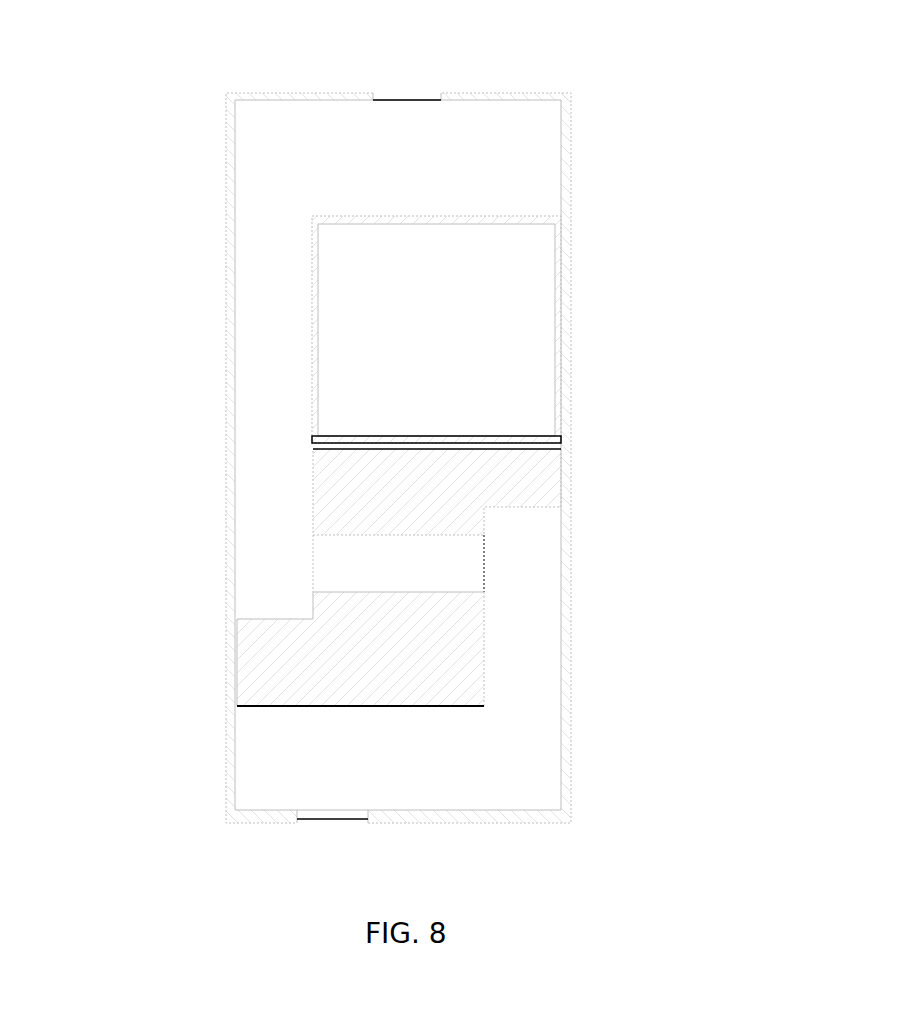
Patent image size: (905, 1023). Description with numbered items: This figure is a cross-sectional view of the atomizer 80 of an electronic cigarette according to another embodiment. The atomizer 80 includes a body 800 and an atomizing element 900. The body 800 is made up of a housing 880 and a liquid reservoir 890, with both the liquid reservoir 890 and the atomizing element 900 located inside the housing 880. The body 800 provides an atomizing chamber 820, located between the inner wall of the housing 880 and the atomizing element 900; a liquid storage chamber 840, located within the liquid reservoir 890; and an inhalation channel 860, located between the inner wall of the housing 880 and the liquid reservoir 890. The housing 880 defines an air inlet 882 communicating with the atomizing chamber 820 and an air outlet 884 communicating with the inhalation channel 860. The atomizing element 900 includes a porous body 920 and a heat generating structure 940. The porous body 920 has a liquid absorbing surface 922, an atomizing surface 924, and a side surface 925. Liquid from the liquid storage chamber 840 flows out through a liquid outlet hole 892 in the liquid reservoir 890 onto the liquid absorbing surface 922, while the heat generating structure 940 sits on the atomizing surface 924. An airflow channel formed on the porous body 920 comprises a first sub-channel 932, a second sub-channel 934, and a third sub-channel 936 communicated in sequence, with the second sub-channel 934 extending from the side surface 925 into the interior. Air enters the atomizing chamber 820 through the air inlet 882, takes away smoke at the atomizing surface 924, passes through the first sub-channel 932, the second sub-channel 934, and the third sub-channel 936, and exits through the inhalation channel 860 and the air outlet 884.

The atomizer 80 is at (98, 70).
The body 800 is at (683, 143).
The housing 880 is at (563, 150).
The air outlet 884 is at (410, 94).
The air inlet 882 is at (323, 819).
The liquid reservoir 890 is at (513, 218).
The liquid outlet hole 892 is at (472, 438).
The inhalation channel 860 is at (268, 347).
The liquid storage chamber 840 is at (510, 321).
The atomizing chamber 820 is at (283, 781).
The atomizing element 900 is at (120, 548).
The porous body 920 is at (330, 525).
The liquid absorbing surface 922 is at (500, 449).
The second sub-channel 934 is at (460, 557).
The heat generating structure 940 is at (288, 706).
The side surface 925 is at (486, 613).
The atomizing surface 924 is at (375, 706).
The third sub-channel 936 is at (268, 506).
The first sub-channel 932 is at (518, 678).